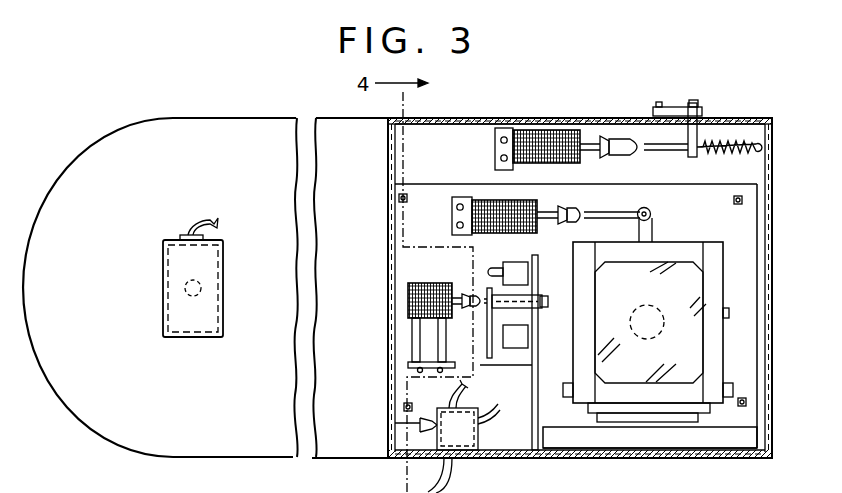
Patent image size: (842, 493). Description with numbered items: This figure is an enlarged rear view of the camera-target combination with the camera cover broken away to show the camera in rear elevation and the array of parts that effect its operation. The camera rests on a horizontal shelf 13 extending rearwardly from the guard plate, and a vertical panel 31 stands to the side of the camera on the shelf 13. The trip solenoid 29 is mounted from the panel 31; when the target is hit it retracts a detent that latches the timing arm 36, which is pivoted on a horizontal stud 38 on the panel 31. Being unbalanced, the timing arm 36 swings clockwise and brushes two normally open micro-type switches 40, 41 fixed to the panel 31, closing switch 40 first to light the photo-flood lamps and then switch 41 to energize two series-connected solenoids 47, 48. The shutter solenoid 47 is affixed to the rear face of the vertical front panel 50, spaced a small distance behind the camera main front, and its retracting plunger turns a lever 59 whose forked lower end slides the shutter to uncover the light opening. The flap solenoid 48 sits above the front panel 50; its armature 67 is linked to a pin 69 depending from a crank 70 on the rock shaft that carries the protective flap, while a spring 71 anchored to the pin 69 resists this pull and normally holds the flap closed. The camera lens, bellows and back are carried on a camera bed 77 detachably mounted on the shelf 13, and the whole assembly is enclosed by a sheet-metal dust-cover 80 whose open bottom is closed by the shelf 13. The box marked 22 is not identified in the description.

The horizontal shelf 13 is at (563, 453).
The switch box 22 is at (190, 290).
The trip solenoid 29 is at (430, 283).
The vertical panel 31 is at (540, 400).
The timing arm 36 is at (487, 318).
The horizontal stud 38 is at (515, 306).
The normally open switch 40 is at (498, 270).
The normally open switch 41 is at (500, 344).
The shutter solenoid 47 is at (493, 202).
The flap solenoid 48 is at (545, 142).
The vertical front panel 50 is at (740, 323).
The lever 59 is at (653, 222).
The armature 67 is at (588, 145).
The pin 69 is at (688, 148).
The crank 70 is at (678, 107).
The spring 71 is at (722, 140).
The camera bed 77 is at (690, 427).
The dust-cover 80 is at (490, 118).